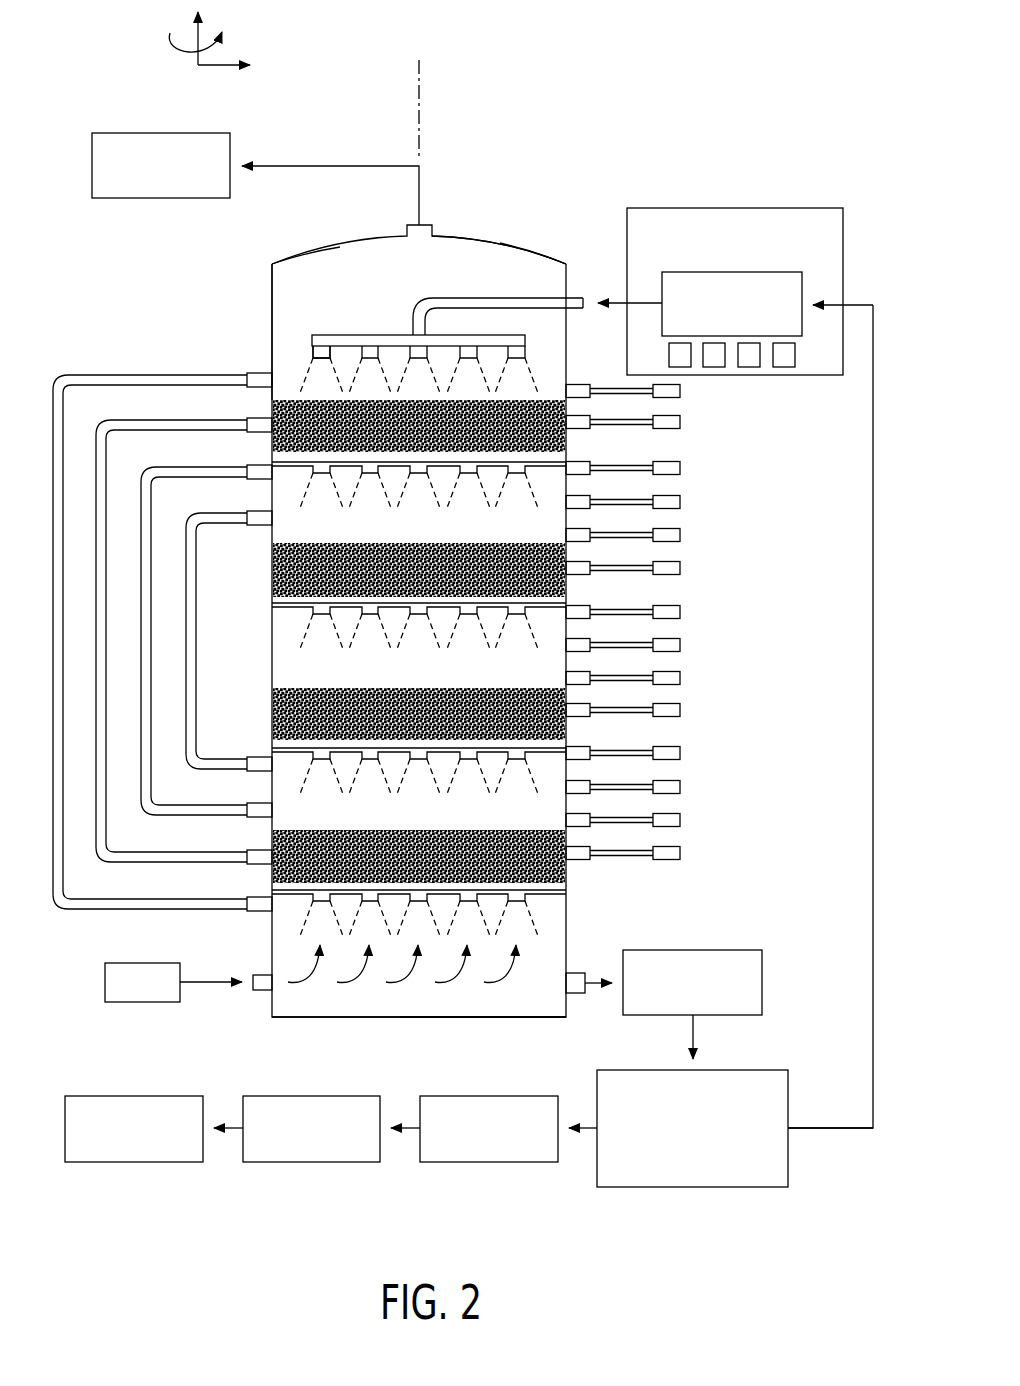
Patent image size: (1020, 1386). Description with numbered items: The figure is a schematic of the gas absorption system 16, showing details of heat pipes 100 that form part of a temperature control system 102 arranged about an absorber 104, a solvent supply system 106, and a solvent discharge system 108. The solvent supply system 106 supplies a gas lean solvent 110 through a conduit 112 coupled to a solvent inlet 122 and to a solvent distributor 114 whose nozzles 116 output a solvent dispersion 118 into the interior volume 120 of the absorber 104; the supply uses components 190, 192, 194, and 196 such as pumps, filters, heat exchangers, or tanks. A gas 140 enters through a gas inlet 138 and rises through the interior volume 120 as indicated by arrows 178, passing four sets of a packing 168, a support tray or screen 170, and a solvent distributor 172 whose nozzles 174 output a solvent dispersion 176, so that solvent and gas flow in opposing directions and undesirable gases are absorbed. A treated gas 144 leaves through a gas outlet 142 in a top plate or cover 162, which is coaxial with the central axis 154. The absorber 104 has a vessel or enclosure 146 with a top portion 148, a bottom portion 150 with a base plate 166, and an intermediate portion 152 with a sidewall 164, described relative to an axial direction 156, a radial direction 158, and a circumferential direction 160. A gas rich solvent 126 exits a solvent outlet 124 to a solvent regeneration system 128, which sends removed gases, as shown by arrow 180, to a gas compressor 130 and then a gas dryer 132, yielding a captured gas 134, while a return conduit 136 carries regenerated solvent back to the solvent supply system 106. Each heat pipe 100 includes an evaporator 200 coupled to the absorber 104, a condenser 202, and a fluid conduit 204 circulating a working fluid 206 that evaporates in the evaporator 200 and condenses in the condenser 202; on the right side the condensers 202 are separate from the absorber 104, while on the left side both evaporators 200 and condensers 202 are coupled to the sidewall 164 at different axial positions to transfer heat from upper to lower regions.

The gas absorption system 16 is at (677, 117).
The heat pipes 100 is at (109, 371).
The temperature control system 102 is at (762, 901).
The absorber 104 is at (506, 224).
The solvent supply system 106 is at (735, 208).
The solvent discharge system 108 is at (826, 1110).
The gas lean solvent 110 is at (790, 272).
The conduit 112 is at (505, 298).
The solvent distributor 114 is at (360, 337).
The nozzles 116 is at (310, 358).
The solvent dispersion 118 is at (530, 367).
The interior volume 120 is at (320, 275).
The solvent inlet 122 is at (583, 296).
The solvent outlet 124 is at (575, 993).
The gas rich solvent 126 is at (762, 980).
The solvent regeneration system 128 is at (690, 1187).
The gas compressor 130 is at (490, 1162).
The gas dryer 132 is at (312, 1162).
The captured gas 134 is at (135, 1162).
The return conduit 136 is at (873, 880).
The gas inlet 138 is at (263, 992).
The gas 140 is at (140, 1002).
The gas outlet 142 is at (432, 225).
The treated gas 144 is at (150, 133).
The vessel or enclosure 146 is at (320, 1017).
The top portion 148 is at (270, 252).
The bottom portion 150 is at (265, 1045).
The intermediate portion 152 is at (200, 355).
The central axis 154 is at (425, 112).
The axial direction or axis 156 is at (198, 28).
The radial direction or axis 158 is at (225, 65).
The circumferential direction or axis 160 is at (190, 52).
The top plate or cover 162 is at (535, 256).
The sidewall 164 is at (272, 290).
The base plate 166 is at (440, 1017).
The packing 168 is at (272, 448).
The support tray or screen 170 is at (537, 474).
The solvent distributor 172 is at (566, 446).
The nozzles 174 is at (298, 474).
The solvent dispersion 176 is at (342, 490).
The arrows 178 is at (352, 992).
The arrow 180 is at (583, 1128).
The component 190 is at (669, 358).
The component 192 is at (714, 367).
The component 194 is at (749, 367).
The component 196 is at (784, 367).
The evaporator 200 is at (68, 332).
The condenser 202 is at (682, 610).
The fluid conduit 204 is at (645, 608).
The working fluid 206 is at (620, 852).